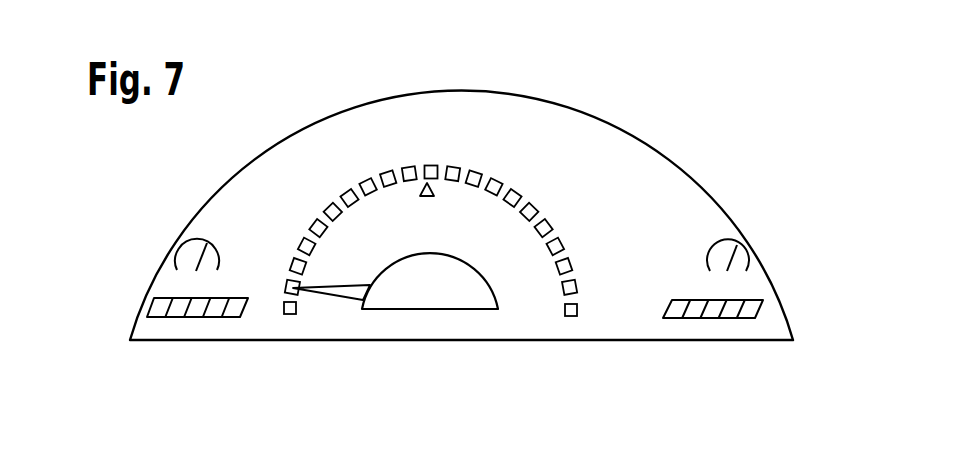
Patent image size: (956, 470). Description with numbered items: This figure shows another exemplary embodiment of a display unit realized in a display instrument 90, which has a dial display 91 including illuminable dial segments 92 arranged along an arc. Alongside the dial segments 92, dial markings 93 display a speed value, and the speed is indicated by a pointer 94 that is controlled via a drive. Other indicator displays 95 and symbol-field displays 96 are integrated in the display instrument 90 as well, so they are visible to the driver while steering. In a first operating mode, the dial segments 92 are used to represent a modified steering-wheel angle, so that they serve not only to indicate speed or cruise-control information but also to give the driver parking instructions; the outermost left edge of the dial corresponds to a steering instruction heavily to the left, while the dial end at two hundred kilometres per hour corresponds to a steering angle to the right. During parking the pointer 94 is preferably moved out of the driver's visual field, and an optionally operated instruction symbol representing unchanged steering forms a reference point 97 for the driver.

The display instrument 90 is at (660, 152).
The dial display 91 is at (505, 147).
The dial segments 92 is at (565, 288).
The dial markings 93 is at (403, 142).
The pointer 94 is at (337, 300).
The indicator displays 95 is at (183, 254).
The symbol-field displays 96 is at (185, 318).
The reference point 97 is at (437, 166).